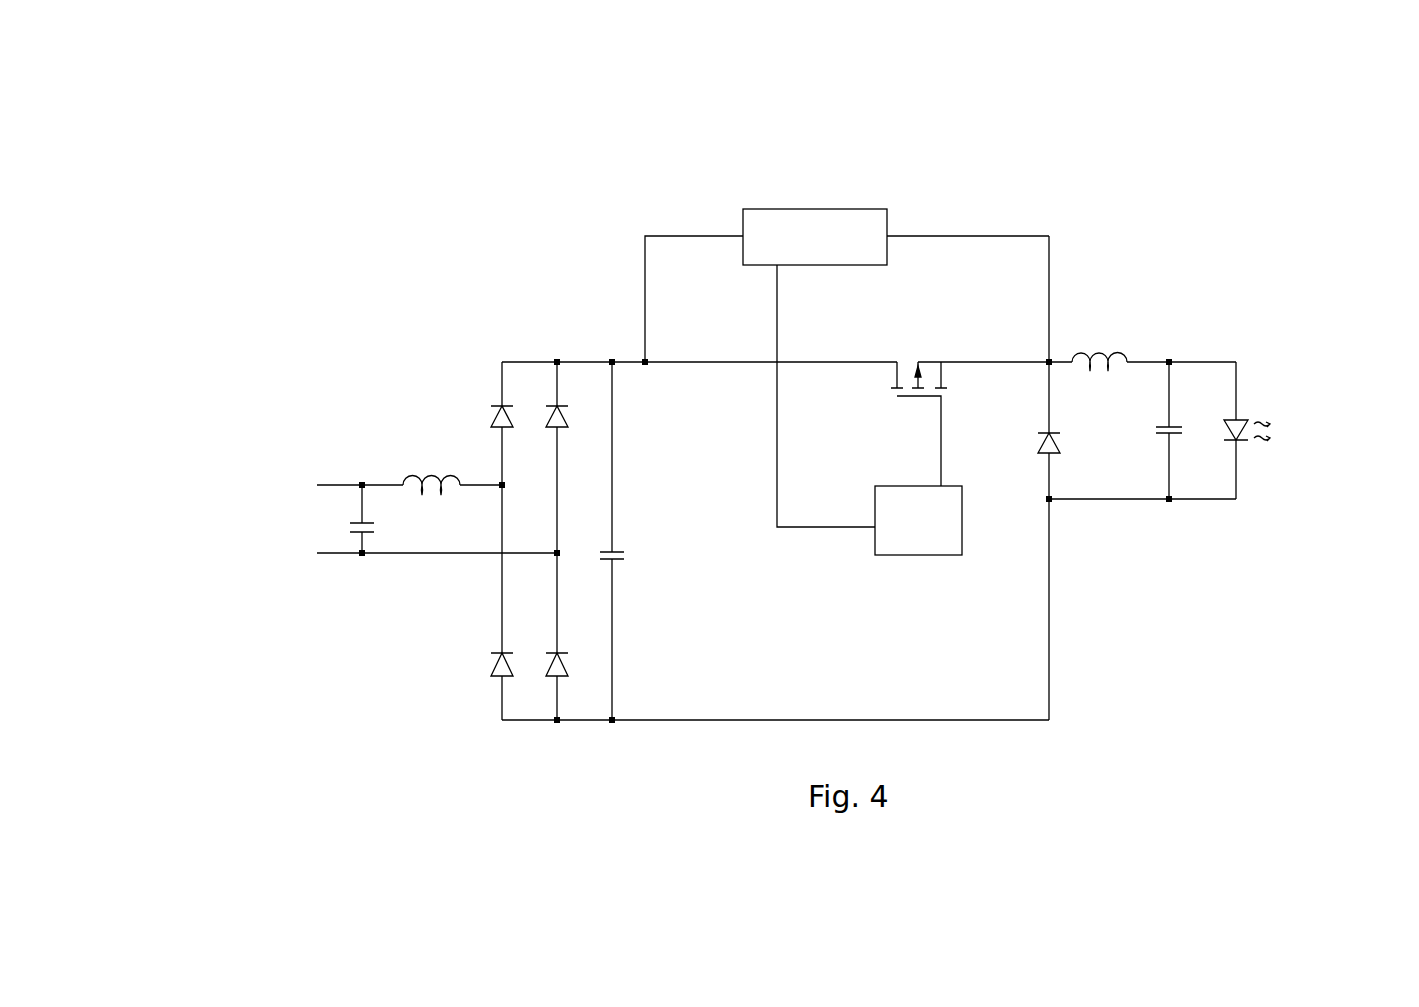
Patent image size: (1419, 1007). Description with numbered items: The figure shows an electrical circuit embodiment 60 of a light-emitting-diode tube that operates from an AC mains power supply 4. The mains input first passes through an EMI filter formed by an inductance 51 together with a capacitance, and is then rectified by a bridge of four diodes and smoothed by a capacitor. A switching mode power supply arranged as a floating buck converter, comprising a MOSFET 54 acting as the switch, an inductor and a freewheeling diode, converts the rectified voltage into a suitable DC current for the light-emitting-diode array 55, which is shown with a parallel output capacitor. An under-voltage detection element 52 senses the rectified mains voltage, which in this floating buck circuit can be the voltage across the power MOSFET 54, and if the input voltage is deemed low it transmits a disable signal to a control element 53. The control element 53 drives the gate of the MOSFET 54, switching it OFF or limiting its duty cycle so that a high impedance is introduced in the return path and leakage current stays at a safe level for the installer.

The mains power supply 4 is at (260, 505).
The inductance L1 51 is at (407, 465).
The under-voltage detection element 52 is at (772, 200).
The control element 53 is at (955, 475).
The MOSFET 54 is at (940, 355).
The LED array 55 is at (1265, 400).
The embodiment 60 is at (1104, 130).